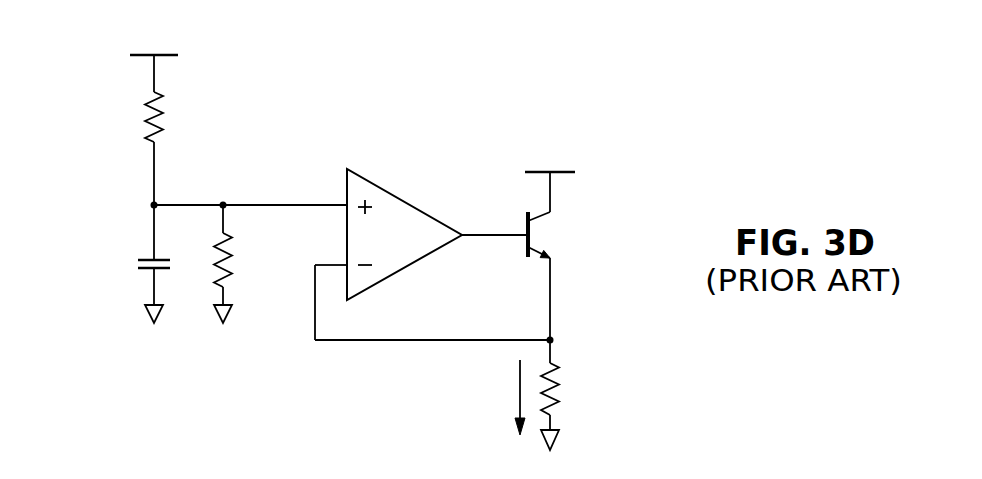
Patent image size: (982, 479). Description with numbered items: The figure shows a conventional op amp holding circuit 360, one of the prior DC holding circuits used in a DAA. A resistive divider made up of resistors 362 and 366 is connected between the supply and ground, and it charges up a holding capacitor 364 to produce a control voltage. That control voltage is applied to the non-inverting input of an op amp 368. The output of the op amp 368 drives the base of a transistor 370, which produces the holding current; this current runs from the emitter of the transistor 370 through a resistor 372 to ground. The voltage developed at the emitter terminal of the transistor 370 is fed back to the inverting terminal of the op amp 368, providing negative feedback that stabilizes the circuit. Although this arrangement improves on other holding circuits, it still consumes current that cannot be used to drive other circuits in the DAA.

The op amp holding circuit 360 is at (90, 53).
The resistor 362 is at (163, 105).
The holding capacitor 364 is at (140, 267).
The resistor 366 is at (238, 258).
The op amp 368 is at (382, 187).
The transistor 370 is at (525, 218).
The resistor 372 is at (563, 375).